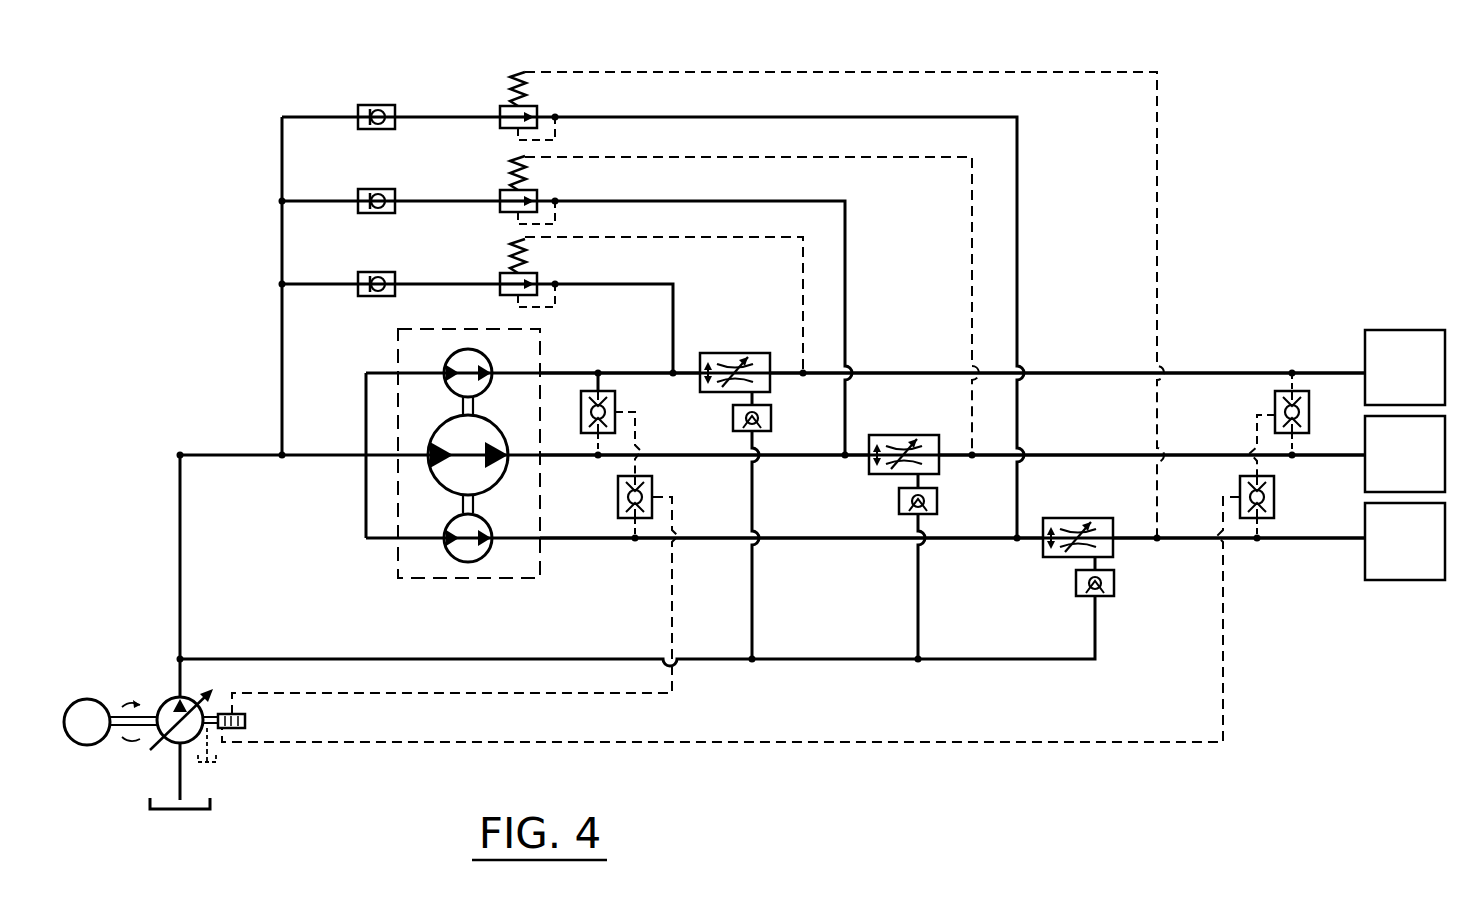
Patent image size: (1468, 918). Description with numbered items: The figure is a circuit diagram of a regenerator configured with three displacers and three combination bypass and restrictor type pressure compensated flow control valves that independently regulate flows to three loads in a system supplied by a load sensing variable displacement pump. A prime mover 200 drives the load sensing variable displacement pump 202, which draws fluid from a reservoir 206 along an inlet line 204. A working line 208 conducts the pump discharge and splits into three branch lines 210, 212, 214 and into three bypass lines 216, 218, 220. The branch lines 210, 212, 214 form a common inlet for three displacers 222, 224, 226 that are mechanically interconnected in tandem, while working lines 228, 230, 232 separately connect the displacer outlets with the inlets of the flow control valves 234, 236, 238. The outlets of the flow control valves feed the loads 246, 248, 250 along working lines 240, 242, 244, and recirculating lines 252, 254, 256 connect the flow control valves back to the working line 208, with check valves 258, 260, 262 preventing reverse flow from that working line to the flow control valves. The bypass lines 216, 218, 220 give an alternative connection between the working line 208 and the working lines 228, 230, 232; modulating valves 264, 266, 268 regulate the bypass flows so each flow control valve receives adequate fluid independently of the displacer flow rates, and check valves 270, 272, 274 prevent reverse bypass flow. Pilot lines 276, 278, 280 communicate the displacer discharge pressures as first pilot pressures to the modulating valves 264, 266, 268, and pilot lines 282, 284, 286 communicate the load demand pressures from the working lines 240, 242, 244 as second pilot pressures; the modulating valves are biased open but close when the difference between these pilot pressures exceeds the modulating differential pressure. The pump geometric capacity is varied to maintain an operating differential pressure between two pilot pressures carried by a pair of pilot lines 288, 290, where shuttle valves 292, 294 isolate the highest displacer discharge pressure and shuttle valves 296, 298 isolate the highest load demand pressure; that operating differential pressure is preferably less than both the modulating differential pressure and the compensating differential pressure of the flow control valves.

The prime mover 200 is at (80, 697).
The load sensing variable displacement pump 202 is at (195, 705).
The inlet line 204 is at (190, 788).
The reservoir 206 is at (158, 808).
The working line 208 is at (180, 575).
The branch line 210 is at (380, 373).
The branch line 212 is at (383, 455).
The branch line 214 is at (380, 540).
The bypass line 216 is at (298, 284).
The bypass line 218 is at (298, 201).
The bypass line 220 is at (315, 117).
The displacer 222 is at (455, 350).
The displacer 224 is at (495, 425).
The displacer 226 is at (495, 528).
The working line 228 is at (548, 373).
The working line 230 is at (728, 455).
The working line 232 is at (870, 538).
The combination bypass and restrictor type pressure compensated flow control valve 234 is at (760, 352).
The combination bypass and restrictor type pressure compensated flow control valve 236 is at (880, 436).
The combination bypass and restrictor type pressure compensated flow control valve 238 is at (1105, 519).
The working line 240 is at (950, 373).
The working line 242 is at (1125, 455).
The working line 244 is at (1133, 545).
The load 246 is at (1395, 330).
The load 248 is at (1362, 478).
The load 250 is at (1362, 560).
The recirculating line 252 is at (752, 618).
The recirculating line 254 is at (918, 620).
The recirculating line 256 is at (1040, 660).
The check valve 258 is at (772, 414).
The check valve 260 is at (900, 496).
The check valve 262 is at (1078, 583).
The modulating valve 264 is at (500, 272).
The modulating valve 266 is at (500, 189).
The modulating valve 268 is at (497, 108).
The check valve 270 is at (374, 272).
The check valve 272 is at (373, 189).
The check valve 274 is at (383, 105).
The pilot line 276 is at (557, 291).
The pilot line 278 is at (557, 215).
The pilot line 280 is at (557, 132).
The pilot line 282 is at (803, 262).
The pilot line 284 is at (972, 272).
The pilot line 286 is at (1157, 272).
The pilot line 288 is at (540, 693).
The pilot line 290 is at (652, 742).
The shuttle valve 292 is at (616, 405).
The shuttle valve 294 is at (655, 486).
The shuttle valve 296 is at (1275, 401).
The shuttle valve 298 is at (1240, 489).